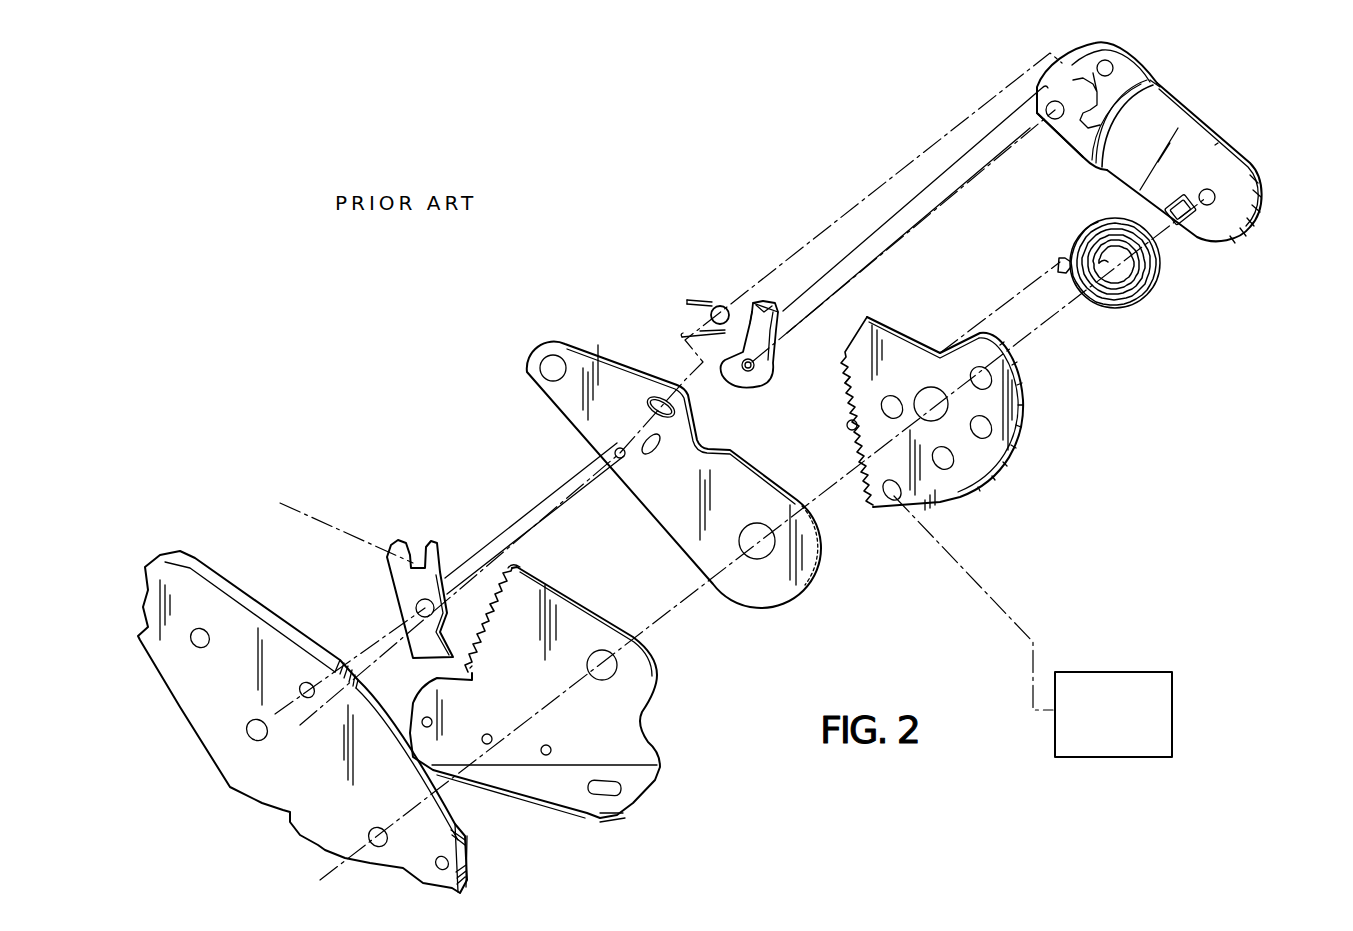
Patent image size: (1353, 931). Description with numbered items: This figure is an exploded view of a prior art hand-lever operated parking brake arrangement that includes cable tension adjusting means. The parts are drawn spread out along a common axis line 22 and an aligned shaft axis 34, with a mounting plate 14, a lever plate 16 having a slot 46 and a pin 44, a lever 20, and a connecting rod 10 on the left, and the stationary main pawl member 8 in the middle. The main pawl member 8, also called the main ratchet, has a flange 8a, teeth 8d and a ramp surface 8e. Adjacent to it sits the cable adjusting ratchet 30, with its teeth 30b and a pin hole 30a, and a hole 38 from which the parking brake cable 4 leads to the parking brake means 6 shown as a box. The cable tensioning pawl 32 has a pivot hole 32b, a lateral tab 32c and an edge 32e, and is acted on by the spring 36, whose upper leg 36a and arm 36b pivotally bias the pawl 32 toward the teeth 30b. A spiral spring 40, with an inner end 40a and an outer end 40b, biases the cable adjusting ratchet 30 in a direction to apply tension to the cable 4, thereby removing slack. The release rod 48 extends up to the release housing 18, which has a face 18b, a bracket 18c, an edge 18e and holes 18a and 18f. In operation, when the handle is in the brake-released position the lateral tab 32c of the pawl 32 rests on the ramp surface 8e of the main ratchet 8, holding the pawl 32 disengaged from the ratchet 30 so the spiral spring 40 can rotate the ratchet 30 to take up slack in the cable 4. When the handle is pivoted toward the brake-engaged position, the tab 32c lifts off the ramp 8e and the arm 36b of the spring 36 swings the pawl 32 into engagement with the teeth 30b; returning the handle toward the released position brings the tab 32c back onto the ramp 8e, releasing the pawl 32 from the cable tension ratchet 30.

The parking brake cable 4 is at (1015, 607).
The parking brake means 6 is at (1123, 672).
The main pawl member 8 is at (566, 685).
The bracket flange 8a is at (637, 767).
The bracket teeth 8d is at (487, 630).
The ramp surface 8e is at (523, 570).
The connecting rod 10 is at (670, 618).
The mounting plate 14 is at (468, 840).
The lever plate 16 is at (674, 487).
The release housing 18 is at (1174, 154).
The housing hole 18a is at (1200, 217).
The housing face 18b is at (1217, 143).
The housing bracket 18c is at (1083, 50).
The housing edge 18e is at (1157, 80).
The housing hole 18f is at (1055, 120).
The lever 20 is at (408, 587).
The axis line 22 is at (528, 518).
The cable adjusting ratchet 30 is at (927, 436).
The sector pin hole 30a is at (850, 430).
The ratchet teeth 30b is at (832, 403).
The cable tensioning pawl 32 is at (763, 311).
The pawl pivot hole 32b is at (754, 367).
The lateral tab 32c is at (771, 302).
The pawl edge 32e is at (746, 326).
The pivot shaft axis 34 is at (897, 250).
The spring 36 is at (676, 275).
The spring upper leg 36a is at (687, 300).
The spring arm 36b is at (680, 336).
The cable attachment hole 38 is at (892, 500).
The spiral spring 40 is at (1072, 290).
The spring inner end 40a is at (1105, 250).
The spring outer end 40b is at (1058, 264).
The pin 44 is at (653, 455).
The slot 46 is at (650, 400).
The release rod 48 is at (890, 178).